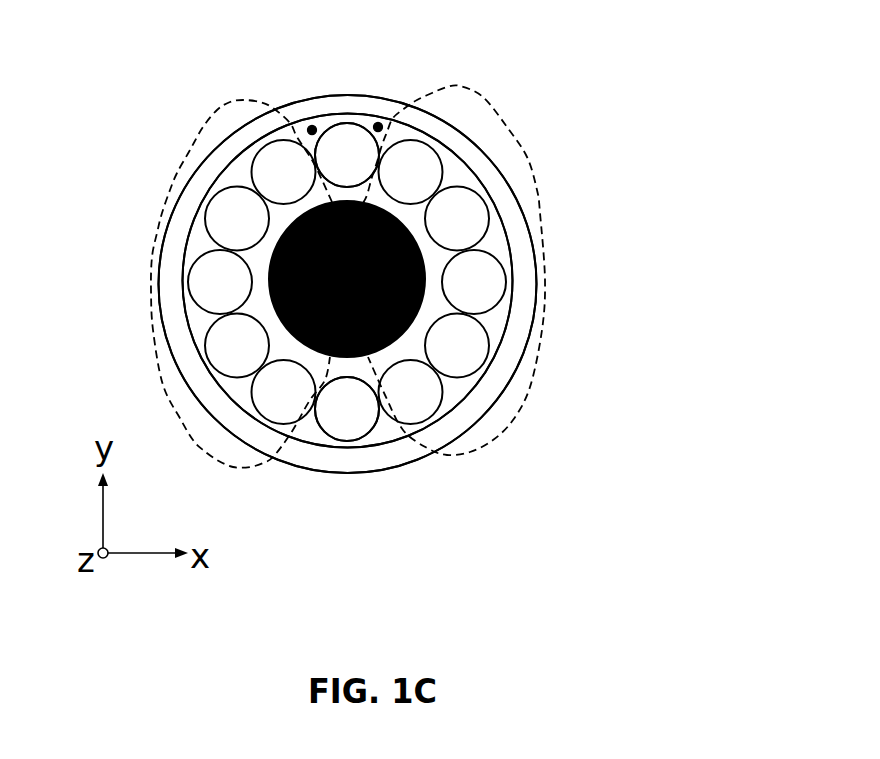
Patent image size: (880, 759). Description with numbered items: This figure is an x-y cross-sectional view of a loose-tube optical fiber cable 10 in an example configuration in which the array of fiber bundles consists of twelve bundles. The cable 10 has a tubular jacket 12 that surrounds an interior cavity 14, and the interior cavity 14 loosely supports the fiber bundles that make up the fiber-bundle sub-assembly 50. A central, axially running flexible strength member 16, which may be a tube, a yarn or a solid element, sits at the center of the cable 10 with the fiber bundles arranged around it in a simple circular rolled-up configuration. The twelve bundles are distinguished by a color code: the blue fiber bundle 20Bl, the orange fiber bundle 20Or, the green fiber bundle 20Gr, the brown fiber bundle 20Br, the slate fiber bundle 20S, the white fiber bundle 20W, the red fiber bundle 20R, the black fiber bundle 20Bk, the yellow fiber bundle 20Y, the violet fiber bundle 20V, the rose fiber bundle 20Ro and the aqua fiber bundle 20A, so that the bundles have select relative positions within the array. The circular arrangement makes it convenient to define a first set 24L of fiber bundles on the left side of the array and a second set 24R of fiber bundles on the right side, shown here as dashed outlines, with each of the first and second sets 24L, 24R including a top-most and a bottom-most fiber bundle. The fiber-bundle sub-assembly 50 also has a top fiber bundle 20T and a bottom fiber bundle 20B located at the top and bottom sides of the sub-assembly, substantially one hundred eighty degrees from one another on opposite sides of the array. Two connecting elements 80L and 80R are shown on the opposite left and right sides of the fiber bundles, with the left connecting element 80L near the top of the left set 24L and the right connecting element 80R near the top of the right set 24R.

The loose-tube optical fiber cable 10 is at (240, 74).
The tubular jacket 12 is at (522, 312).
The interior cavity 14 is at (453, 173).
The central flexible strength member 16 is at (331, 291).
The aqua fiber bundle 20A is at (302, 183).
The blue fiber bundle 20Bl is at (327, 166).
The orange fiber bundle 20Or is at (434, 183).
The green fiber bundle 20Gr is at (434, 230).
The brown fiber bundle 20Br is at (451, 293).
The slate fiber bundle 20S is at (439, 356).
The white fiber bundle 20W is at (432, 403).
The red fiber bundle 20R is at (328, 420).
The black fiber bundle 20Bk is at (260, 403).
The yellow fiber bundle 20Y is at (219, 356).
The violet fiber bundle 20V is at (202, 293).
The rose fiber bundle 20Ro is at (214, 230).
The top fiber bundle 20T is at (347, 122).
The bottom fiber bundle 20B is at (360, 442).
The first set of fiber bundles 24L is at (150, 252).
The second set of fiber bundles 24R is at (543, 218).
The fiber-bundle sub-assembly 50 is at (226, 160).
The left connecting element 80L is at (311, 126).
The right connecting element 80R is at (380, 123).